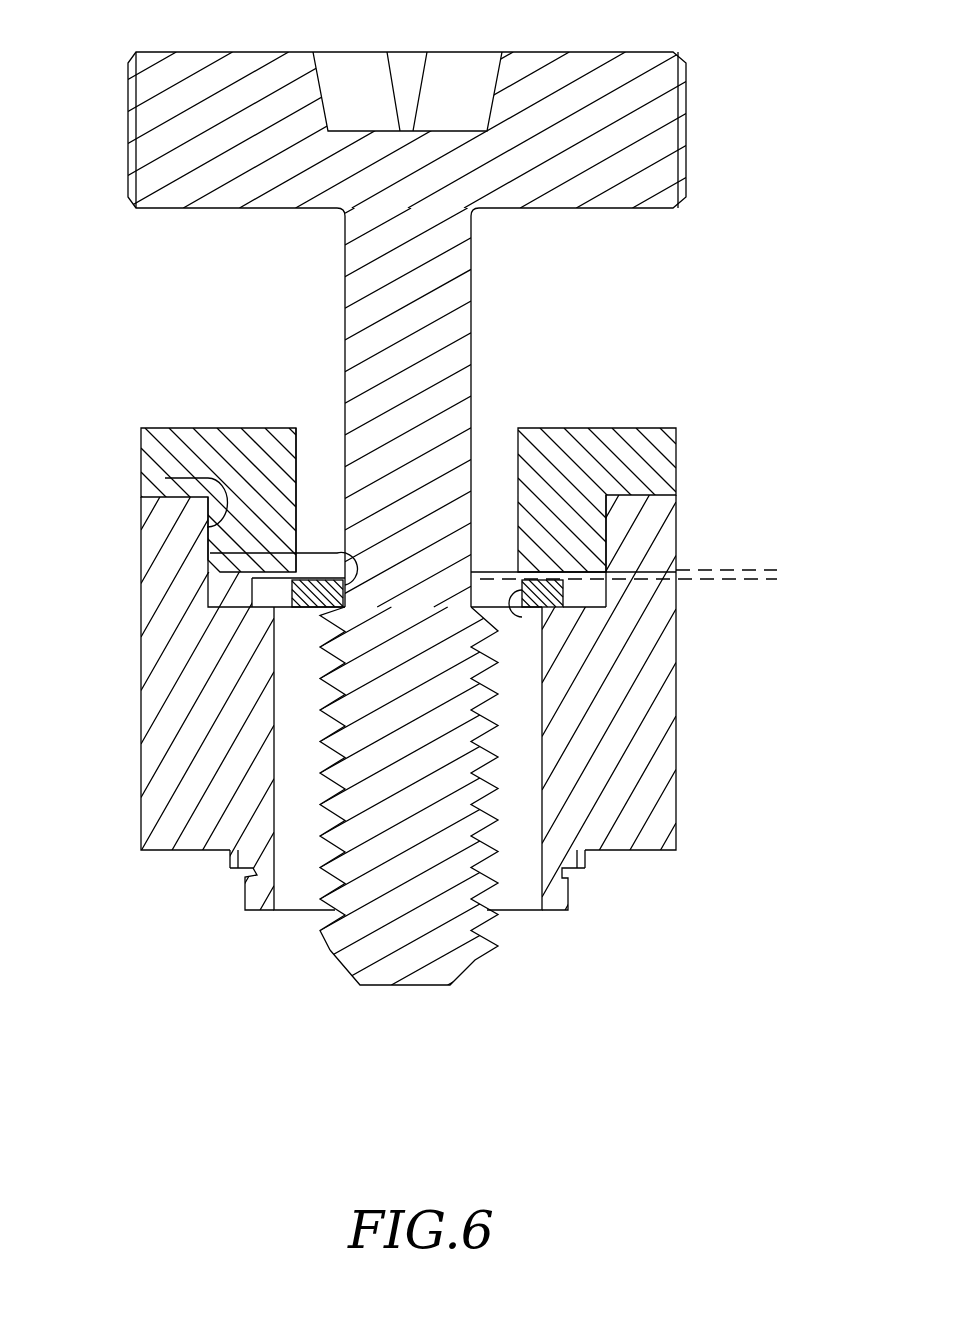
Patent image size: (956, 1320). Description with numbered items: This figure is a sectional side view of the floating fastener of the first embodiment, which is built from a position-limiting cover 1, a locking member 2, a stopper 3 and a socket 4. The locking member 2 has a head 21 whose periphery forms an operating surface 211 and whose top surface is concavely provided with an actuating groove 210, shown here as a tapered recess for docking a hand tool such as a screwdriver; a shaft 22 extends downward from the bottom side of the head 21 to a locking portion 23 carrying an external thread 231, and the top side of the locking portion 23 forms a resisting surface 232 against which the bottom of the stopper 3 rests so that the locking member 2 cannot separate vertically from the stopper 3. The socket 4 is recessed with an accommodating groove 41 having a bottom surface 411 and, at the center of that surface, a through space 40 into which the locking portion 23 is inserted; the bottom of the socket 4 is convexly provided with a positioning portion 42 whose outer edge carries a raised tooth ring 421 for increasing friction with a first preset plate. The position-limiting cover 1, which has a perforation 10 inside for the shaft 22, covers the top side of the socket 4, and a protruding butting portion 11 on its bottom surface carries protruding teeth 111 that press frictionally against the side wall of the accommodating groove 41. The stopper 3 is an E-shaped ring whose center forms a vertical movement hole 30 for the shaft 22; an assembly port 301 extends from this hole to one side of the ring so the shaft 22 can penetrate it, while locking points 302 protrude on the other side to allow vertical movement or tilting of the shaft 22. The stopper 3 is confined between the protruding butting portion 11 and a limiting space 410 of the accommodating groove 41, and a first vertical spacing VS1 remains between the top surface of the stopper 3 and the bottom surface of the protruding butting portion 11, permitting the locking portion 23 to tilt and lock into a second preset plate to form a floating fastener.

The position-limiting cover 1 is at (445, 477).
The perforation 10 is at (319, 448).
The protruding butting portion 11 is at (566, 565).
The protruding teeth 111 is at (608, 523).
The locking member 2 is at (714, 144).
The head 21 is at (372, 104).
The actuating groove 210 is at (446, 92).
The operating surface 211 is at (135, 121).
The shaft 22 is at (455, 291).
The locking portion 23 is at (499, 682).
The external thread 231 is at (484, 917).
The resisting surface 232 is at (483, 604).
The stopper 3 is at (406, 615).
The vertical movement hole 30 is at (350, 569).
The assembly port 301 is at (255, 592).
The locking points 302 is at (524, 617).
The socket 4 is at (411, 708).
The through space 40 is at (295, 862).
The accommodating groove 41 is at (207, 480).
The limiting space 410 is at (595, 592).
The bottom surface 411 is at (232, 596).
The positioning portion 42 is at (250, 893).
The raised tooth ring 421 is at (230, 864).
The first vertical spacing VS1 is at (757, 625).